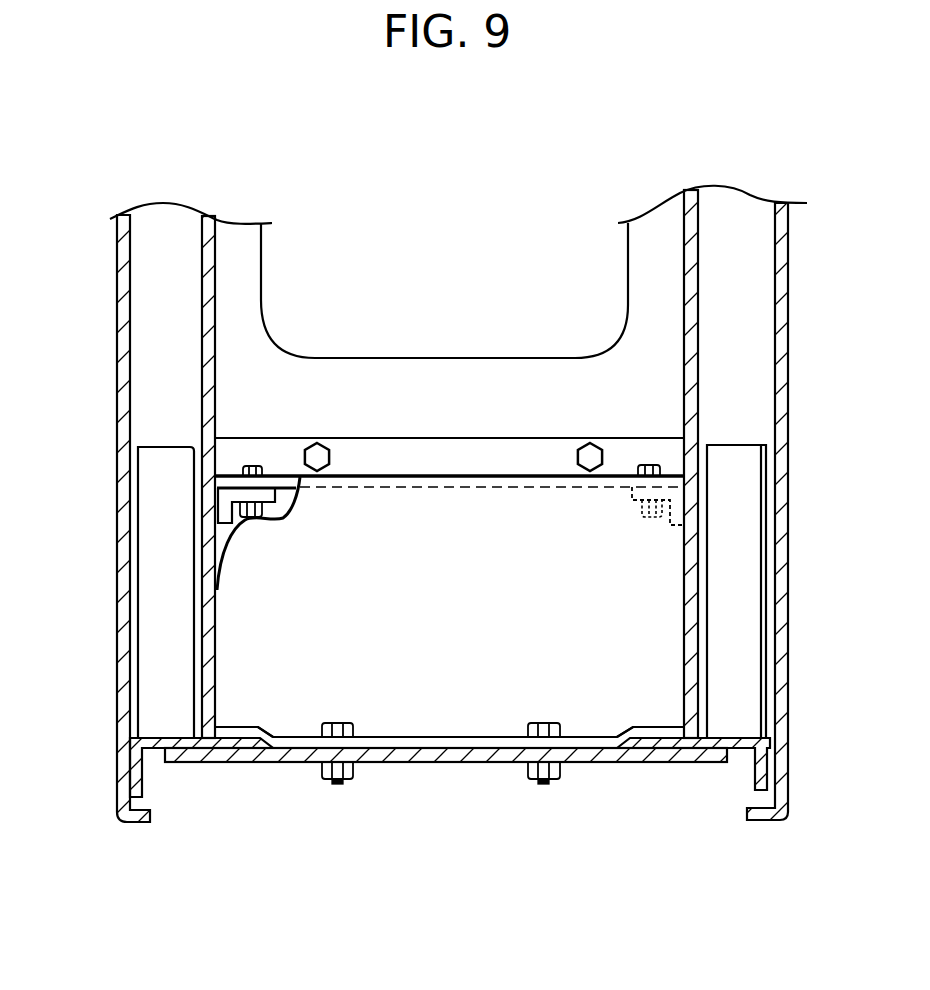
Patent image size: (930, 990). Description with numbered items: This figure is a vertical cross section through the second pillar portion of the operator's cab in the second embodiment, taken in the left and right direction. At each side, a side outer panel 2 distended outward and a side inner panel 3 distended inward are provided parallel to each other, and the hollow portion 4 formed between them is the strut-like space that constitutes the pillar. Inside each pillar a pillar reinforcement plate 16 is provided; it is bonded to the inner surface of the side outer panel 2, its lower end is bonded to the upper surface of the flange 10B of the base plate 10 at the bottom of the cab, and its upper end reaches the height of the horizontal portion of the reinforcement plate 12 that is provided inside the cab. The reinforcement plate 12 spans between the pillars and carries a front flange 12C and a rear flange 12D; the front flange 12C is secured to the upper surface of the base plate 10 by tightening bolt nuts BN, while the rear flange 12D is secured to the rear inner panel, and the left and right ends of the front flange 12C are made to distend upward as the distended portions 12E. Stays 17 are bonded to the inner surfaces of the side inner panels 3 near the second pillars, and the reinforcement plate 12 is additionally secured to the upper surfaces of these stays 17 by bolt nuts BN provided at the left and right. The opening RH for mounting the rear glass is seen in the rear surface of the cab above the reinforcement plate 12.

The side outer panel 2 is at (117, 373).
The side inner panel 3 is at (203, 337).
The hollow portion 4 is at (140, 280).
The pillar reinforcement plate 16 is at (163, 472).
The stay 17 is at (227, 507).
The reinforcement plate 12 is at (238, 607).
The front flange 12C is at (492, 473).
The rear flange 12D is at (558, 455).
The distended portion 12E is at (247, 723).
The bolt nut BN is at (253, 467).
The opening for mounting a rear glass RH is at (261, 305).
The base plate 10 is at (430, 763).
The flange 10B is at (153, 753).